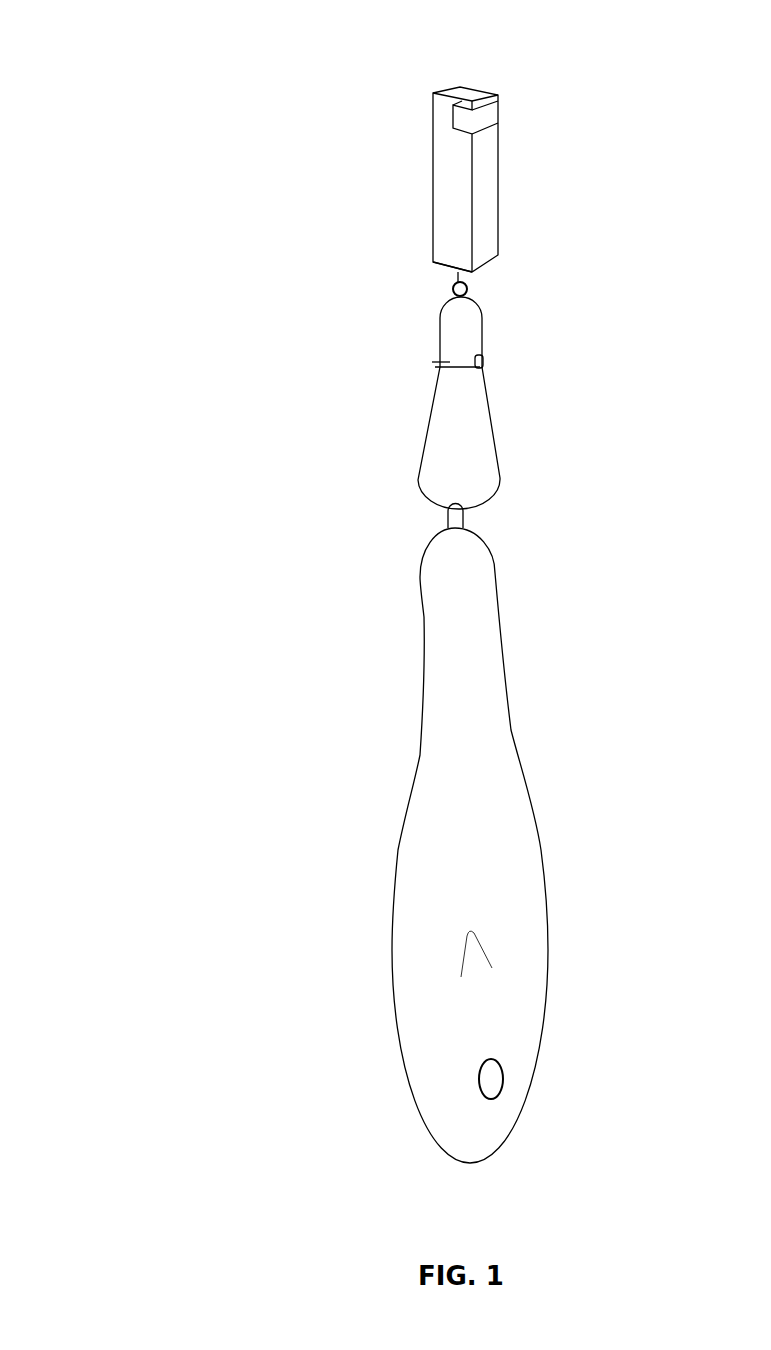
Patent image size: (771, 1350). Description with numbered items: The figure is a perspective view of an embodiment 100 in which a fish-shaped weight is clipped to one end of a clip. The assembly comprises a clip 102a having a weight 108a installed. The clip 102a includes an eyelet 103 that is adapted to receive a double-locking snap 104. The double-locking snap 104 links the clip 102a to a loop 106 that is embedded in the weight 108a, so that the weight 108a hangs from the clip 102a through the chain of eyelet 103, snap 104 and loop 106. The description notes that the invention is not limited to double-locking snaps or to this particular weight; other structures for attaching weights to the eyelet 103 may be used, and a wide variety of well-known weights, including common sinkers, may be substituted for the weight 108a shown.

The embodiment 100 is at (183, 95).
The clip 102a is at (547, 150).
The eyelet 103 is at (472, 287).
The double-locking snap 104 is at (482, 328).
The loop 106 is at (463, 518).
The weight 108a is at (501, 801).